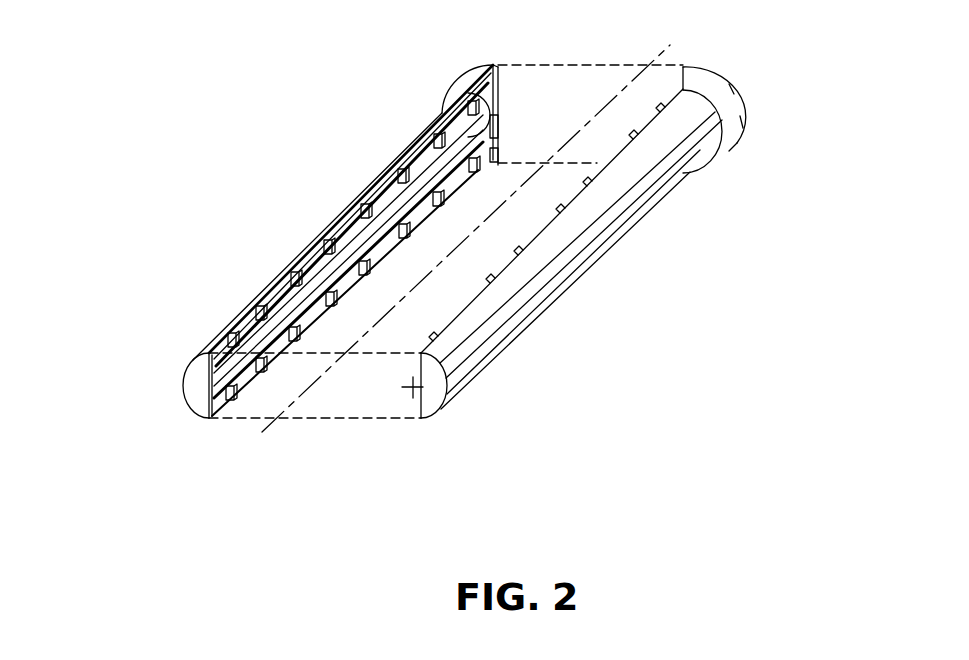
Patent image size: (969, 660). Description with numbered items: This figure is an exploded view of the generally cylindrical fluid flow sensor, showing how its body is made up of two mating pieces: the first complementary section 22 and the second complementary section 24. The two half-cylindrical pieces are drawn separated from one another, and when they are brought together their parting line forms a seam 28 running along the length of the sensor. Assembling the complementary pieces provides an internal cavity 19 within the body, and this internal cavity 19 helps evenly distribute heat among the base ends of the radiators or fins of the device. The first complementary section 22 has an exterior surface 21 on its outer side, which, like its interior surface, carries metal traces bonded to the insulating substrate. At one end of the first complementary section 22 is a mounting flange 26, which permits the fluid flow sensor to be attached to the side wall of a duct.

The internal cavity 19 is at (200, 378).
The exterior surface 21 is at (580, 241).
The first complementary section 22 is at (533, 292).
The second complementary section 24 is at (337, 217).
The mounting flange 26 is at (723, 108).
The seam 28 is at (577, 191).